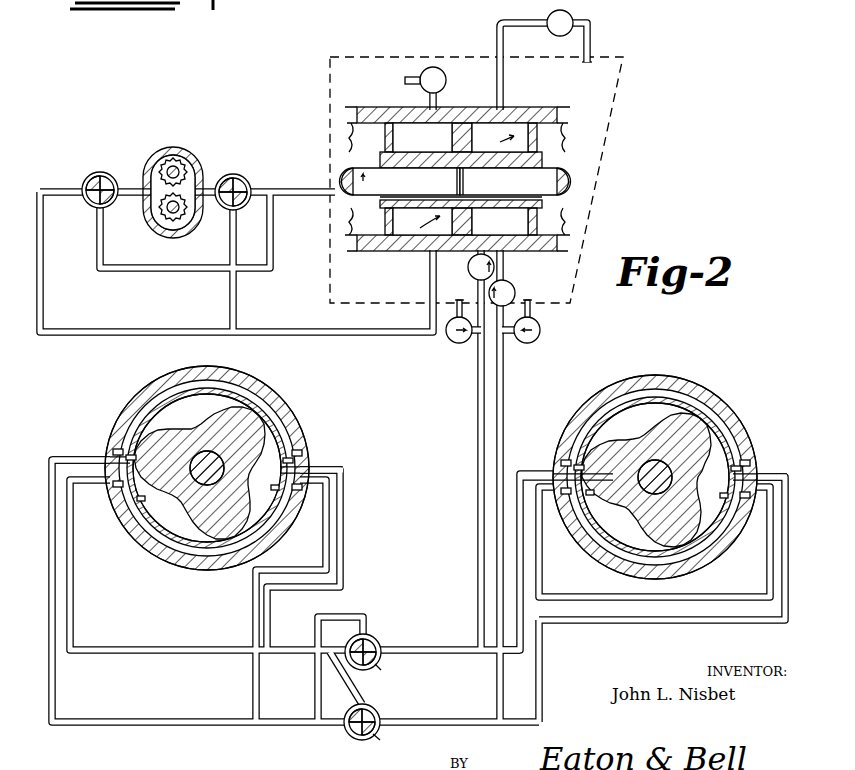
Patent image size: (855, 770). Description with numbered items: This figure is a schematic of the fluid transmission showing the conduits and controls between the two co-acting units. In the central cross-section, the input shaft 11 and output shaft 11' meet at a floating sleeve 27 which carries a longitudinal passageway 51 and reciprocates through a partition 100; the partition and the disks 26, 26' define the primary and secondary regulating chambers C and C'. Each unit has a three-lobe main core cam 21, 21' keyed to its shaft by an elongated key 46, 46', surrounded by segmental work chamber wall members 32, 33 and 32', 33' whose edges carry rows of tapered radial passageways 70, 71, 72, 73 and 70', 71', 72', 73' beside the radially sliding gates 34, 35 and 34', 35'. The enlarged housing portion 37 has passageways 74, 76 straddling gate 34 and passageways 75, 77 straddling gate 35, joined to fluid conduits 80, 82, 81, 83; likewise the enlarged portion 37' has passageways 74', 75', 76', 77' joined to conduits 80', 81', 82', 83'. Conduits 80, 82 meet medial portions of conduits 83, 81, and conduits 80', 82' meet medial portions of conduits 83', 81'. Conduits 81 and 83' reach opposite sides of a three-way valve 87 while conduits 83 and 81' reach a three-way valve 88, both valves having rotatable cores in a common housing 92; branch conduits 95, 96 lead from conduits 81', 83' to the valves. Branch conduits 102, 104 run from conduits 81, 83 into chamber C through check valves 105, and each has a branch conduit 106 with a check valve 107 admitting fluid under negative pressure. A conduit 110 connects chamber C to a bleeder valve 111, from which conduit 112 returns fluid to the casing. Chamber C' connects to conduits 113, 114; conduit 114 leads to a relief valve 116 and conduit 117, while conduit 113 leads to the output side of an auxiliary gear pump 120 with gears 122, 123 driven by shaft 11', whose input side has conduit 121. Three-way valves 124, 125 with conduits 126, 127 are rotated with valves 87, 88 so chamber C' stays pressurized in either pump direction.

The input shaft 11 is at (576, 331).
The output shaft 11' is at (291, 318).
The main core cam 21 is at (646, 477).
The main core cam 21' is at (199, 473).
The disk 26 is at (477, 179).
The disk 26' is at (342, 179).
The floating sleeve 27 is at (497, 141).
The segmental work chamber wall member 32 is at (655, 494).
The segmental work chamber wall member 32' is at (207, 492).
The segmental work chamber wall member 33 is at (655, 468).
The segmental work chamber wall member 33' is at (207, 466).
The gate 34 is at (773, 477).
The gate 34' is at (326, 458).
The gate 35 is at (566, 497).
The gate 35' is at (85, 443).
The enlarged portion of the housing 37 is at (655, 465).
The enlarged portion of the housing 37' is at (207, 465).
The key 46 is at (655, 477).
The key 46' is at (207, 468).
The passageway 51 is at (484, 219).
The passageway 70 is at (712, 509).
The passageway 70' is at (265, 492).
The passageway 71 is at (597, 492).
The passageway 71' is at (153, 504).
The passageway 72 is at (717, 453).
The passageway 72' is at (270, 456).
The passageway 73 is at (591, 461).
The passageway 73' is at (147, 445).
The passageway 74 is at (751, 525).
The passageway 74' is at (305, 514).
The passageway 75 is at (559, 517).
The passageway 75' is at (101, 503).
The passageway 76 is at (761, 451).
The passageway 76' is at (316, 444).
The passageway 77 is at (550, 452).
The passageway 77' is at (102, 442).
The fluid conduit 80 is at (654, 542).
The fluid conduit 80' is at (268, 601).
The fluid conduit 81 is at (553, 671).
The fluid conduit 81' is at (295, 565).
The fluid conduit 82 is at (662, 560).
The fluid conduit 82' is at (321, 560).
The fluid conduit 83 is at (533, 562).
The fluid conduit 83' is at (295, 591).
The three-way valve 87 is at (376, 735).
The three-way valve 88 is at (375, 640).
The common housing 92 is at (380, 670).
The branch conduit 95 is at (349, 685).
The branch conduit 96 is at (316, 680).
The partition 100 is at (449, 137).
The branch conduit 102 is at (503, 416).
The branch conduit 104 is at (477, 470).
The check valve 105 is at (469, 267).
The branch conduit 106 is at (455, 305).
The check valve 107 is at (462, 343).
The conduit 110 is at (529, 22).
The bleeder valve 111 is at (572, 14).
The conduit 112 is at (586, 58).
The conduit 113 is at (430, 290).
The conduit 114 is at (430, 100).
The relief valve 116 is at (436, 67).
The conduit 117 is at (405, 80).
The auxiliary pump 120 is at (163, 150).
The conduit 121 is at (289, 186).
The gear 122 is at (173, 150).
The gear 123 is at (160, 212).
The three-way valve 124 is at (97, 153).
The three-way valve 125 is at (253, 147).
The conduit 126 is at (242, 275).
The conduit 127 is at (229, 303).
The primary regulating chamber C is at (484, 145).
The secondary regulating chamber C' is at (450, 234).